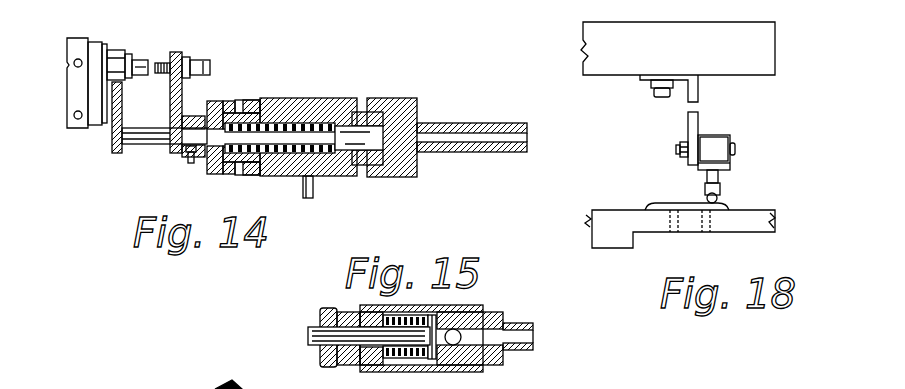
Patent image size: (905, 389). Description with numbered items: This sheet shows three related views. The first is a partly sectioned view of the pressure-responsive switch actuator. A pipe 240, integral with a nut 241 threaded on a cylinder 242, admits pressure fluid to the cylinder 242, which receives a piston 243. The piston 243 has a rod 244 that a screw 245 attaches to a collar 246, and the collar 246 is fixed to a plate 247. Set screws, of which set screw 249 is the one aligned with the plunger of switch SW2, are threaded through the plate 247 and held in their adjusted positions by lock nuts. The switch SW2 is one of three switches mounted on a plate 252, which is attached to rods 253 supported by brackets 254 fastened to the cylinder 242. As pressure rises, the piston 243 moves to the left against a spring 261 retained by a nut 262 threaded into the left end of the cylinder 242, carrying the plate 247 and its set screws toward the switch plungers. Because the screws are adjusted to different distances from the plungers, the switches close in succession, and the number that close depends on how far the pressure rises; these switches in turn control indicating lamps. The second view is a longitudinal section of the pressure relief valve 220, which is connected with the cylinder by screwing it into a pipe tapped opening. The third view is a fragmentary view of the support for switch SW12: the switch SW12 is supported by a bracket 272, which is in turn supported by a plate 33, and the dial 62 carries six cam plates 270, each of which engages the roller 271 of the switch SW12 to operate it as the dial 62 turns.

In FIG. 14, the switch SW2 is at (75, 43).
In FIG. 14, the plate 252 is at (112, 147).
In FIG. 14, the rods 253 is at (158, 146).
In FIG. 14, the plate 247 is at (171, 100).
In FIG. 14, the set screw 249 is at (208, 59).
In FIG. 14, the collar 246 is at (192, 115).
In FIG. 14, the screw 245 is at (188, 163).
In FIG. 14, the rod 244 is at (210, 165).
In FIG. 14, the nut 262 is at (225, 100).
In FIG. 14, the brackets 254 is at (236, 100).
In FIG. 14, the spring 261 is at (280, 108).
In FIG. 14, the cylinder 242 is at (325, 84).
In FIG. 14, the nut 241 is at (407, 98).
In FIG. 14, the piston 243 is at (350, 112).
In FIG. 14, the pipe 240 is at (473, 123).
In FIG. 15, the pressure relief valve 220 is at (490, 313).
In FIG. 18, the plate 33 is at (746, 77).
In FIG. 18, the bracket 272 is at (698, 123).
In FIG. 18, the switch SW12 is at (731, 140).
In FIG. 18, the roller 271 is at (721, 192).
In FIG. 18, the cam plates 270 is at (672, 204).
In FIG. 18, the dial 62 is at (768, 210).